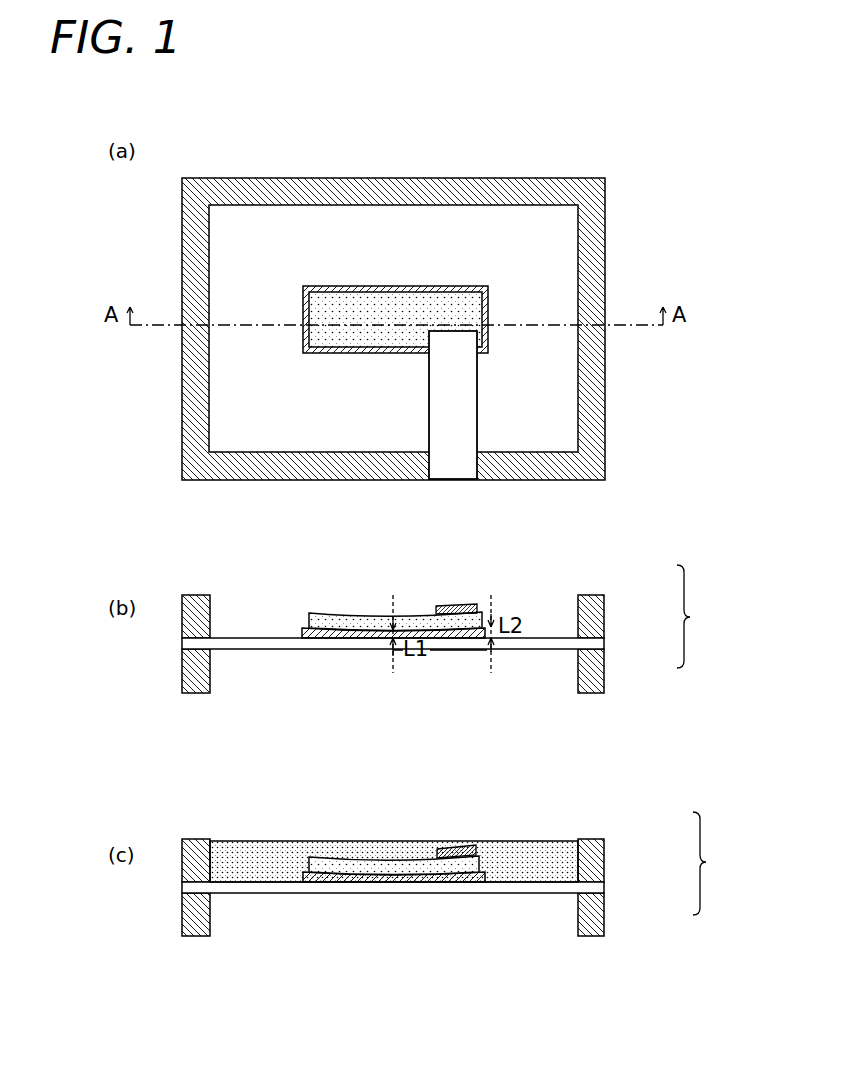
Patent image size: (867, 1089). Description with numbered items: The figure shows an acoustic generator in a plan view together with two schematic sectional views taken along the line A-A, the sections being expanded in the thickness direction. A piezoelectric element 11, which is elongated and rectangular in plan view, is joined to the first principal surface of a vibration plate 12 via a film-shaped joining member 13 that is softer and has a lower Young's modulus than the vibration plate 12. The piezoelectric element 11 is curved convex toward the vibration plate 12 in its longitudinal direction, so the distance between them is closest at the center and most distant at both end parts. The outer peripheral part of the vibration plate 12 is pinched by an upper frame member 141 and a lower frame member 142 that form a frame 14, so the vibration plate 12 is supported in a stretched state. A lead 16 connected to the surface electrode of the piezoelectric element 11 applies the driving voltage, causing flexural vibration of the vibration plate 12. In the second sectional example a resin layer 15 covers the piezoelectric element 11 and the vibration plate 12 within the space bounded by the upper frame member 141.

The piezoelectric element 11 is at (390, 305).
The vibration plate 12 is at (512, 423).
The joining member 13 is at (482, 290).
The frame 14 is at (583, 268).
The upper frame member 141 is at (585, 620).
The lower frame member 142 is at (585, 673).
The resin layer 15 is at (525, 857).
The lead 16 is at (456, 440).